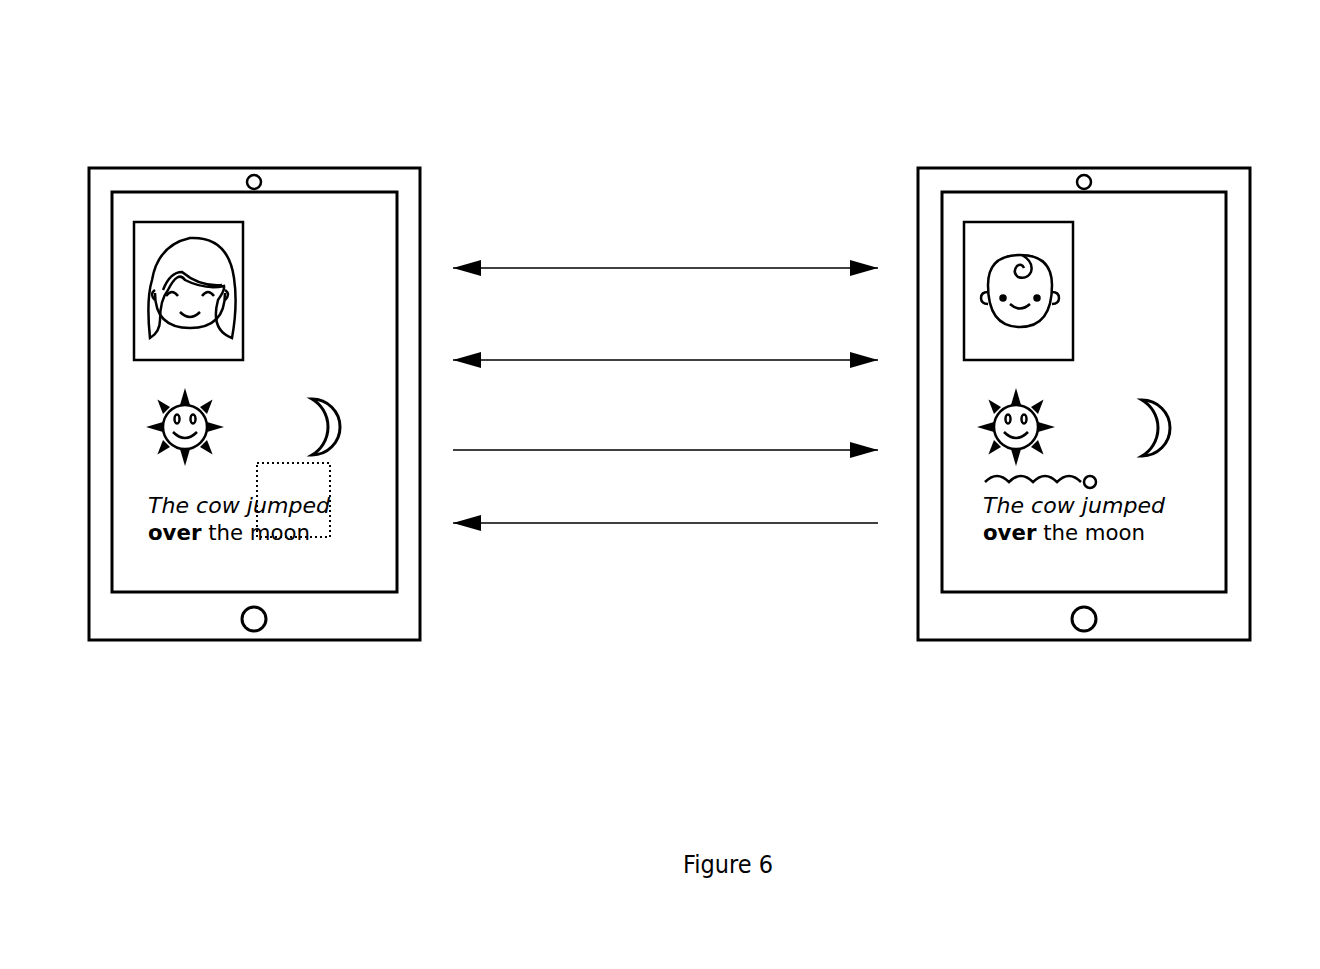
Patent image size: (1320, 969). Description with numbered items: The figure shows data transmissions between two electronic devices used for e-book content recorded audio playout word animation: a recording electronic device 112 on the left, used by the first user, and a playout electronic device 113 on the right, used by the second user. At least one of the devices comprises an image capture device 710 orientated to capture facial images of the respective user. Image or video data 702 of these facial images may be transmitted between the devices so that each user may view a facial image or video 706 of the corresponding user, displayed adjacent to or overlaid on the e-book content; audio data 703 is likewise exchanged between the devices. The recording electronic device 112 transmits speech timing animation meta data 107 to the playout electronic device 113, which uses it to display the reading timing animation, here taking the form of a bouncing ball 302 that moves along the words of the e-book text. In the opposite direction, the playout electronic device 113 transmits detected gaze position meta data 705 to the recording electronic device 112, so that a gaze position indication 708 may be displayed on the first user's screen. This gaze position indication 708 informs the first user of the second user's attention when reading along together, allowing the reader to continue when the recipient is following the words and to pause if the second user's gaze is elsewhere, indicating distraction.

The recording electronic device 112 is at (452, 105).
The playout electronic device 113 is at (1278, 105).
The image capture device 710 is at (259, 176).
The facial image or video 706 is at (242, 285).
The gaze position indication 708 is at (330, 475).
The bouncing ball 302 is at (1095, 477).
The video data 702 is at (713, 233).
The audio data 703 is at (713, 327).
The speech timing animation meta data 107 is at (785, 420).
The detected gaze position meta data 705 is at (778, 492).